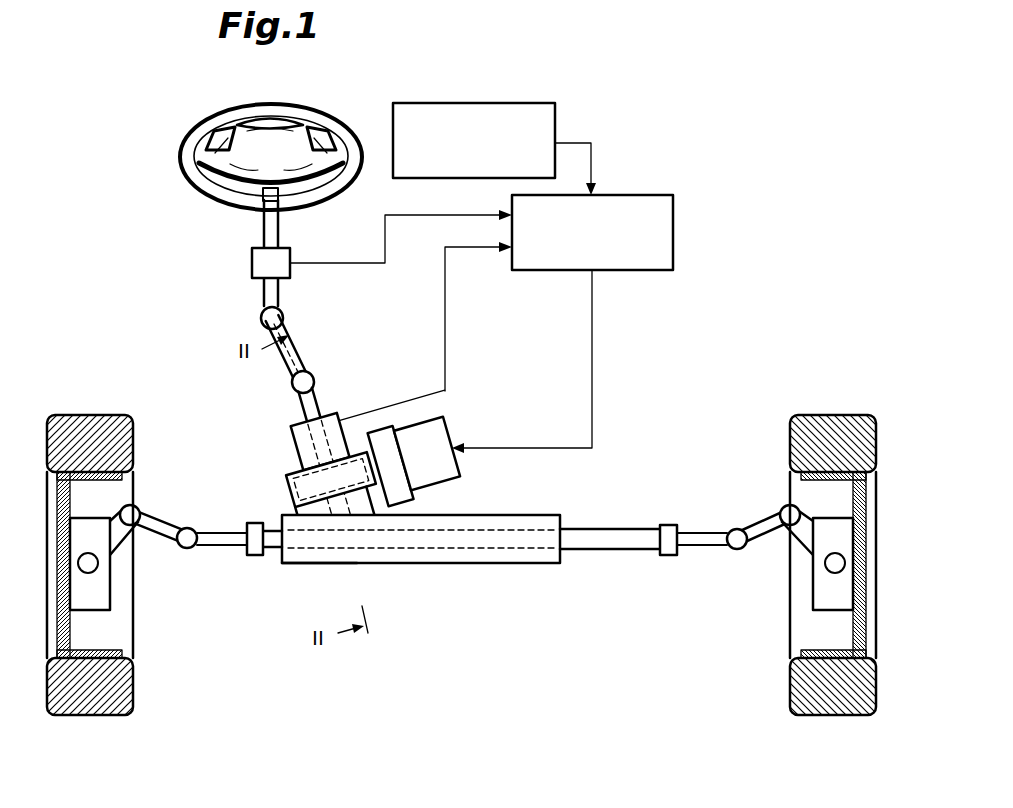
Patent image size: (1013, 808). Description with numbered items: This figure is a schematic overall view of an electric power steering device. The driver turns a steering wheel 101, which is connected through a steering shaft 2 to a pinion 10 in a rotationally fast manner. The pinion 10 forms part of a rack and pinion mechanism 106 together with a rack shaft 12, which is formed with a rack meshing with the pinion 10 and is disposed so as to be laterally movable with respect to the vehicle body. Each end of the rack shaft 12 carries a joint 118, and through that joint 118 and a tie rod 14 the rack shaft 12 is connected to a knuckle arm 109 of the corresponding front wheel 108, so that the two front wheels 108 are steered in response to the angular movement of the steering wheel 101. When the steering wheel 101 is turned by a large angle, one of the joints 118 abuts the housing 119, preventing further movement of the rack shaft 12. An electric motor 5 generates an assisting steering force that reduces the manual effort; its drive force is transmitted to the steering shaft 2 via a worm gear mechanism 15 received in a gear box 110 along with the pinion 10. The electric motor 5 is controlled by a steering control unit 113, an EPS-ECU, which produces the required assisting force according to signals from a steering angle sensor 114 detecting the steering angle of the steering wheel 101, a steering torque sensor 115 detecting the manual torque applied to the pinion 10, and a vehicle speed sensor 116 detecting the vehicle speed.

The steering wheel 101 is at (181, 164).
The steering shaft 2 is at (262, 236).
The steering angle sensor 114 is at (254, 273).
The steering torque sensor 115 is at (294, 447).
The worm gear mechanism 15 is at (289, 493).
The electric motor 5 is at (451, 430).
The vehicle speed sensor 116 is at (522, 103).
The steering control unit (EPS-ECU) 113 is at (638, 195).
The pinion 10 is at (336, 542).
The rack shaft 12 is at (473, 550).
The housing 119 is at (520, 566).
The gear box 110 is at (449, 575).
The rack and pinion mechanism 106 is at (366, 572).
The joint 118 is at (253, 560).
The tie rod 14 is at (153, 543).
The knuckle arm 109 is at (116, 508).
The front wheel 108 is at (93, 413).